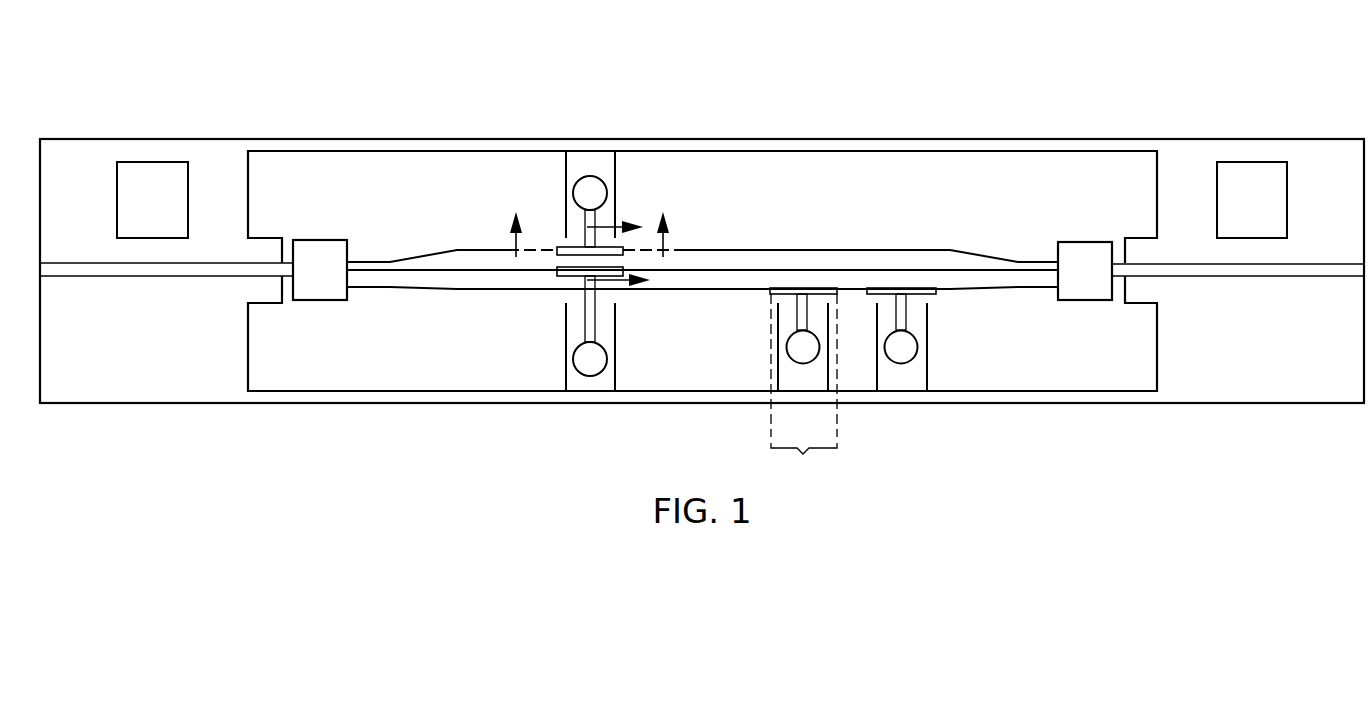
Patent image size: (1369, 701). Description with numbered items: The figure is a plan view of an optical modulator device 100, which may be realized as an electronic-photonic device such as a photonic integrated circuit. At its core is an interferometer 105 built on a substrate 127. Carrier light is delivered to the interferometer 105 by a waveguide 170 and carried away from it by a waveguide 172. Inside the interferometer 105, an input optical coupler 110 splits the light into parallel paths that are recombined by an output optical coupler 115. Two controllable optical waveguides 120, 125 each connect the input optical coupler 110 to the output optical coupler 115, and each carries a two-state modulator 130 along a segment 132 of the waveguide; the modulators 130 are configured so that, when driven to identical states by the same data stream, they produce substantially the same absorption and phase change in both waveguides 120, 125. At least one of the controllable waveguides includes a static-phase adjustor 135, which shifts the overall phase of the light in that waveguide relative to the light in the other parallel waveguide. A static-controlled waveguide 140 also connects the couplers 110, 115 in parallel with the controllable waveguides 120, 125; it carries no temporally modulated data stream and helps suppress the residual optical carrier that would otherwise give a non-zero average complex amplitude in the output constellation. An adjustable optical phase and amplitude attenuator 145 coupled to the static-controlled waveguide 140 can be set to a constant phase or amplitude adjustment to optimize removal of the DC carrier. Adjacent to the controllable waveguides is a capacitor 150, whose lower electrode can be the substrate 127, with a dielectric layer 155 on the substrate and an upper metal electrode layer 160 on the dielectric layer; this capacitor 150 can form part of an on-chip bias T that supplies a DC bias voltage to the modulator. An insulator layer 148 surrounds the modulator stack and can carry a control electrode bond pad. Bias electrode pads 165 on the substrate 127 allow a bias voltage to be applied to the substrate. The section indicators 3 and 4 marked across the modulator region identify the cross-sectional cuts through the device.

The optical modulator device 100 is at (968, 57).
The interferometer 105 is at (686, 273).
The input optical coupler 110 is at (318, 290).
The output optical coupler 115 is at (1087, 290).
The controllable optical waveguide 120 is at (725, 249).
The controllable optical waveguide 125 is at (680, 291).
The substrate 127 is at (124, 353).
The two-state modulator 130 is at (562, 247).
The segment 132 is at (804, 390).
The static-phase adjustor 135 is at (915, 298).
The static-controlled waveguide 140 is at (985, 260).
The adjustable optical phase and amplitude attenuator 145 is at (563, 278).
The insulator layer 148 is at (593, 160).
The capacitor 150 is at (702, 240).
The dielectric layer 155 is at (100, 148).
The upper metal electrode layer 160 is at (386, 205).
The bias electrode pad 165 is at (131, 210).
The waveguide 170 is at (88, 279).
The waveguide 172 is at (1305, 278).
The section line 3- 3 is at (618, 257).
The section line 4- 4 is at (589, 220).